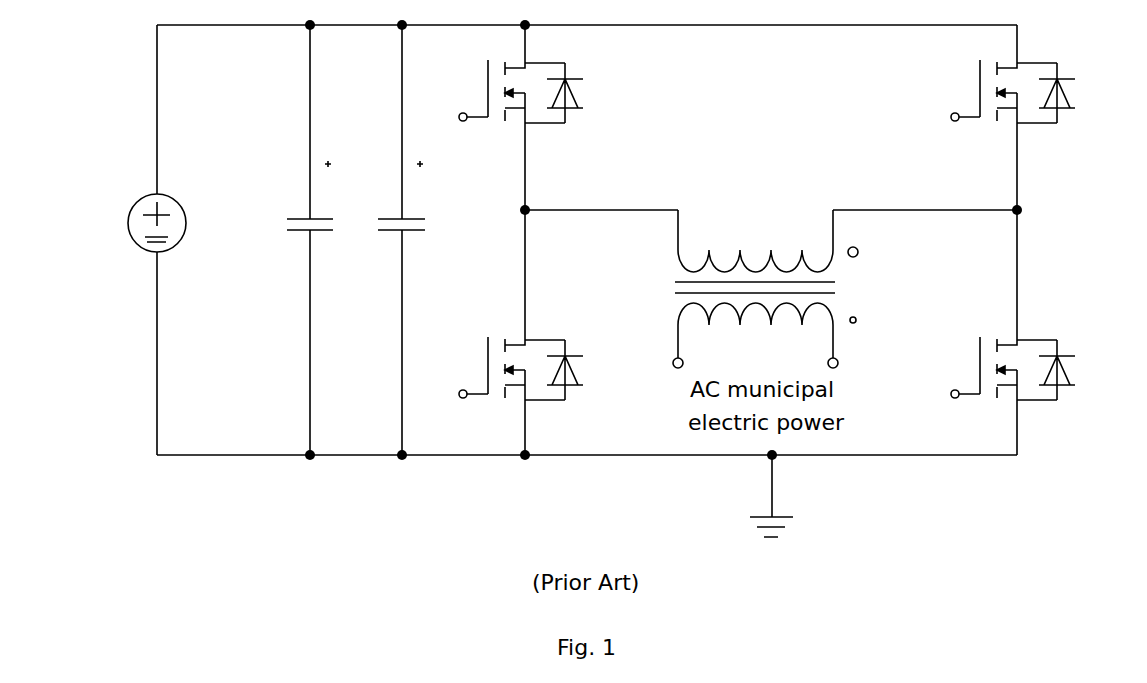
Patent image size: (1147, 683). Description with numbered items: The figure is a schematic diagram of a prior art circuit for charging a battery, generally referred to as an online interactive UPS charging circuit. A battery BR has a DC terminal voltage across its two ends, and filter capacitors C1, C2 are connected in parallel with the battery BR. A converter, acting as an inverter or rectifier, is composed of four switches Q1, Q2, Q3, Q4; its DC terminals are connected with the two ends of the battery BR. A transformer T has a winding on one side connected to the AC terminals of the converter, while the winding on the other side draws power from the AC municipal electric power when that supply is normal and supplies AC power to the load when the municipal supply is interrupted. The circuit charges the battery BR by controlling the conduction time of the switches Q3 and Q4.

The battery BR is at (110, 240).
The filter capacitor C1 is at (278, 240).
The filter capacitor C2 is at (430, 240).
The switch Q1 is at (548, 91).
The switch Q2 is at (1040, 91).
The switch Q3 is at (548, 368).
The switch Q4 is at (1040, 368).
The transformer T is at (765, 266).